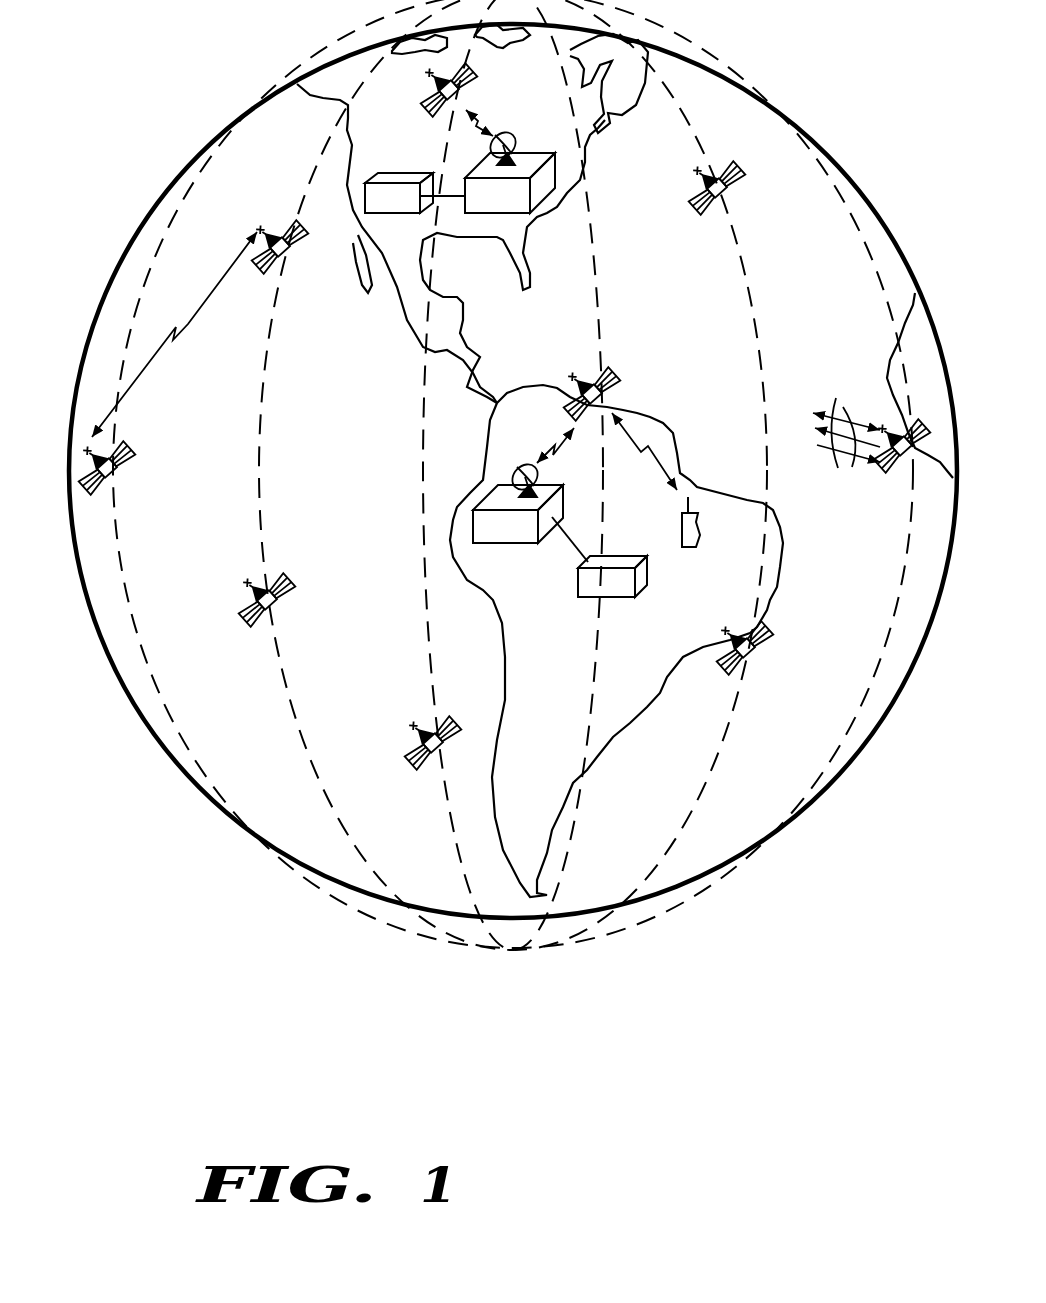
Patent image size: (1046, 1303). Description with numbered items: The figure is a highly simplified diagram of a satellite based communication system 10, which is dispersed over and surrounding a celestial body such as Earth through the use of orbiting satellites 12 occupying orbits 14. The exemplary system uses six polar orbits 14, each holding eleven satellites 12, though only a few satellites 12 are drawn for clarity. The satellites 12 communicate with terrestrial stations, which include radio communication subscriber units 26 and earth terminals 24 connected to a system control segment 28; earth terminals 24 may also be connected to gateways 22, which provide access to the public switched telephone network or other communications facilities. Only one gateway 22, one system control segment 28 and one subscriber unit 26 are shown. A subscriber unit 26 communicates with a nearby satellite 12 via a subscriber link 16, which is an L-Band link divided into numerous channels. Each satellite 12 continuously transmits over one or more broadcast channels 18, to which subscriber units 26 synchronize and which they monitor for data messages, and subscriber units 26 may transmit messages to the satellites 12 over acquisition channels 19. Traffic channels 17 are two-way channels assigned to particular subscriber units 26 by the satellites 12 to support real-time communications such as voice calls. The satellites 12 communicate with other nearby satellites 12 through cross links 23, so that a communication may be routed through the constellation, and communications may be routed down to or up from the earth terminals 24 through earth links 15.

The satellite based communication system 10 is at (507, 1050).
The satellite 12 is at (434, 121).
The orbit 14 is at (323, 176).
The earth link 15 is at (551, 446).
The subscriber link 16 is at (637, 437).
The traffic channel 17 is at (835, 410).
The broadcast channel 18 is at (828, 433).
The acquisition channel 19 is at (840, 460).
The gateway 22 is at (618, 597).
The cross link 23 is at (188, 324).
The earth terminal 24 is at (533, 152).
The subscriber unit 26 is at (690, 548).
The system control segment 28 is at (383, 215).